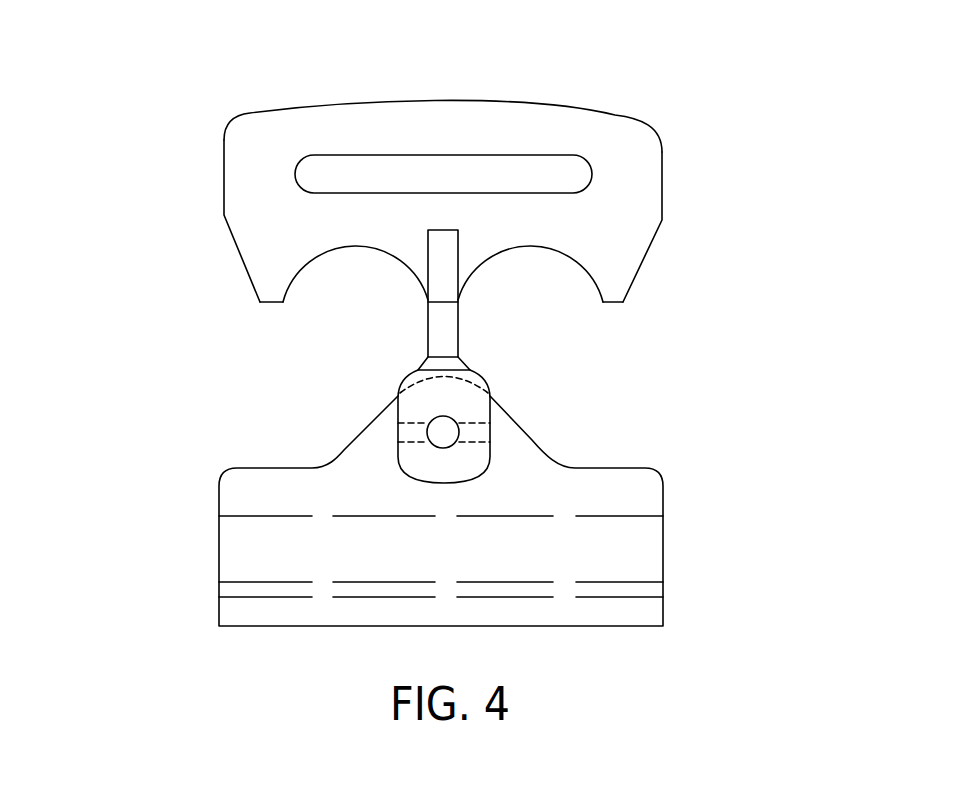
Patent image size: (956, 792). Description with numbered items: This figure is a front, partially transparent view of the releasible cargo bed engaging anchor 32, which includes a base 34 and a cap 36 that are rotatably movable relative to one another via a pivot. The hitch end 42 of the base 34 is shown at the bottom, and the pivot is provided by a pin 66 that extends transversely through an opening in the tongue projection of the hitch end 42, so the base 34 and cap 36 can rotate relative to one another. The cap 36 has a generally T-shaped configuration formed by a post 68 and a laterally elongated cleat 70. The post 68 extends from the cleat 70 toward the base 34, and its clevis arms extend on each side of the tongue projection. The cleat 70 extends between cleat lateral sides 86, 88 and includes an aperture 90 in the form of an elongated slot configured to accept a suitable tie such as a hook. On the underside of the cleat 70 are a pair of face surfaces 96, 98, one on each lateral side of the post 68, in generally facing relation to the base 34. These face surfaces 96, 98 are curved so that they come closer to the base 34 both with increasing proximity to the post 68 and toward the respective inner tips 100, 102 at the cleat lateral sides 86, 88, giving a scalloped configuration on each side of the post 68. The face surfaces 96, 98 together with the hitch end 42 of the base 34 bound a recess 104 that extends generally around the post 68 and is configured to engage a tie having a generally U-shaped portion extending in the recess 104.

The releasible cargo bed engaging anchor 32 is at (784, 237).
The base 34 is at (150, 508).
The cap 36 is at (133, 230).
The hitch end 42 is at (529, 438).
The pin 66 is at (455, 421).
The post 68 is at (420, 305).
The cleat 70 is at (623, 116).
The cleat lateral side 86 is at (226, 226).
The cleat lateral side 88 is at (660, 231).
The aperture 90 is at (492, 154).
The face surface 96 is at (334, 252).
The face surface 98 is at (530, 250).
The inner tip 100 is at (260, 304).
The inner tip 102 is at (624, 305).
The recess 104 is at (330, 383).